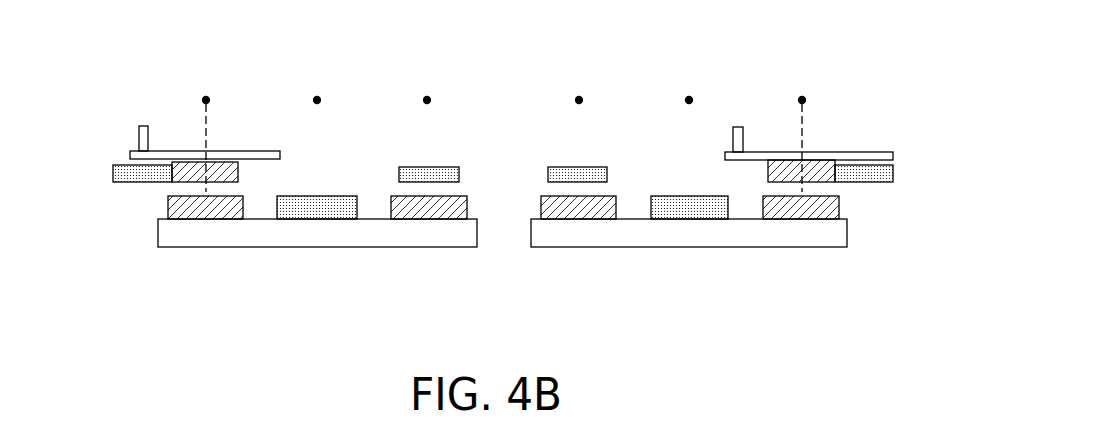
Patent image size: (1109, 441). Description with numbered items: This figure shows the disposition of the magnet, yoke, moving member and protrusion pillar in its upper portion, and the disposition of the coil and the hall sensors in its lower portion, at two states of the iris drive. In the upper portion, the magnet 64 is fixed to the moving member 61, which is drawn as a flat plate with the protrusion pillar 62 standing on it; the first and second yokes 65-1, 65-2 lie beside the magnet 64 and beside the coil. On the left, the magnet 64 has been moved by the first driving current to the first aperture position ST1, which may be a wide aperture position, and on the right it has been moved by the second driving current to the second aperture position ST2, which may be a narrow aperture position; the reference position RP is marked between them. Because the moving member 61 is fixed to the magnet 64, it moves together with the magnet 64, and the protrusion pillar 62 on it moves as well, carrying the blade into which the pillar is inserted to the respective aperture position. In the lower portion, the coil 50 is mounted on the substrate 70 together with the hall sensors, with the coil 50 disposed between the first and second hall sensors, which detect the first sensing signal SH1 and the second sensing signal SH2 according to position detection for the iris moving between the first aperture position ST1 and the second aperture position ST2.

The substrate 70 is at (252, 237).
The first sensing signal SH1 is at (222, 210).
The second sensing signal SH2 is at (440, 208).
The coil 50 is at (313, 210).
The moving member 61 is at (254, 151).
The protrusion pillar 62 is at (139, 133).
The magnet 64 is at (233, 173).
The first yoke 65-1 is at (139, 182).
The second yoke 65-2 is at (434, 167).
The first aperture position ST1 is at (206, 100).
The second aperture position ST2 is at (427, 100).
The reference position RP is at (317, 100).